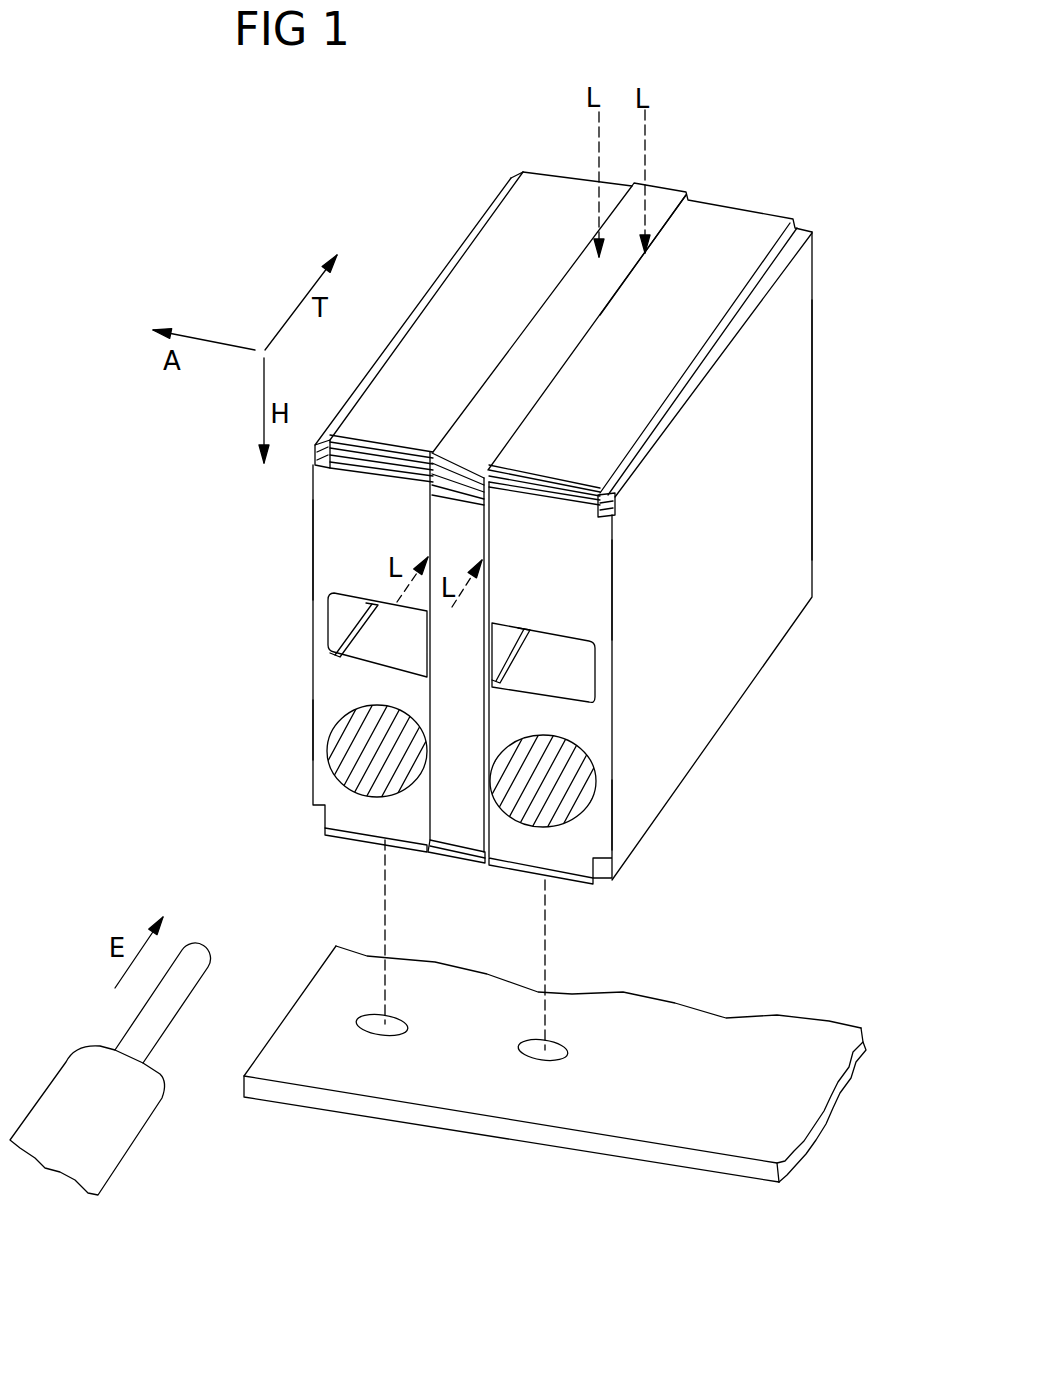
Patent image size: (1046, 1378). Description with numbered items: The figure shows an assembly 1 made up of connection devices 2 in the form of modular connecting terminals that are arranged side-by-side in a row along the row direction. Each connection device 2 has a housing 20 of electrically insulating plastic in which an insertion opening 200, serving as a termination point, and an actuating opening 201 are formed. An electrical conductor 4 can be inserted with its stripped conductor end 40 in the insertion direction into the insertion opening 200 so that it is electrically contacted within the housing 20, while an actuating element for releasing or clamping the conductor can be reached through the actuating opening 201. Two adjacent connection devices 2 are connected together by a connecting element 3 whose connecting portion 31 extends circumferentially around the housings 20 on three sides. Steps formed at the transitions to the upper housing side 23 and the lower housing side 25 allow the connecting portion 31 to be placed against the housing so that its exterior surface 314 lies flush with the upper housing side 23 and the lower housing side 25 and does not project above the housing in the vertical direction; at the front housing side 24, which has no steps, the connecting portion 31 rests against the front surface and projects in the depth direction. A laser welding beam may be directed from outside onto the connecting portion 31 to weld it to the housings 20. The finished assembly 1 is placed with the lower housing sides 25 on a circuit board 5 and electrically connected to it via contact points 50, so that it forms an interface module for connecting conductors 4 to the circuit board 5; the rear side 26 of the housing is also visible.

The assembly 1 is at (787, 183).
The connection device 2 is at (348, 803).
The connecting element 3 is at (665, 200).
The electrical conductor 4 is at (72, 1085).
The circuit board 5 is at (584, 1141).
The housing 20 is at (325, 693).
The upper housing side 23 is at (596, 334).
The front housing side 24 is at (327, 541).
The lower housing side 25 is at (407, 850).
The rear wall 26 is at (864, 430).
The connecting portion 31 is at (545, 350).
The stripped conductor end 40 is at (170, 1007).
The contact point 50 is at (380, 1146).
The insertion opening 200 is at (352, 755).
The actuating opening 201 is at (328, 640).
The exterior surface 314 is at (596, 312).